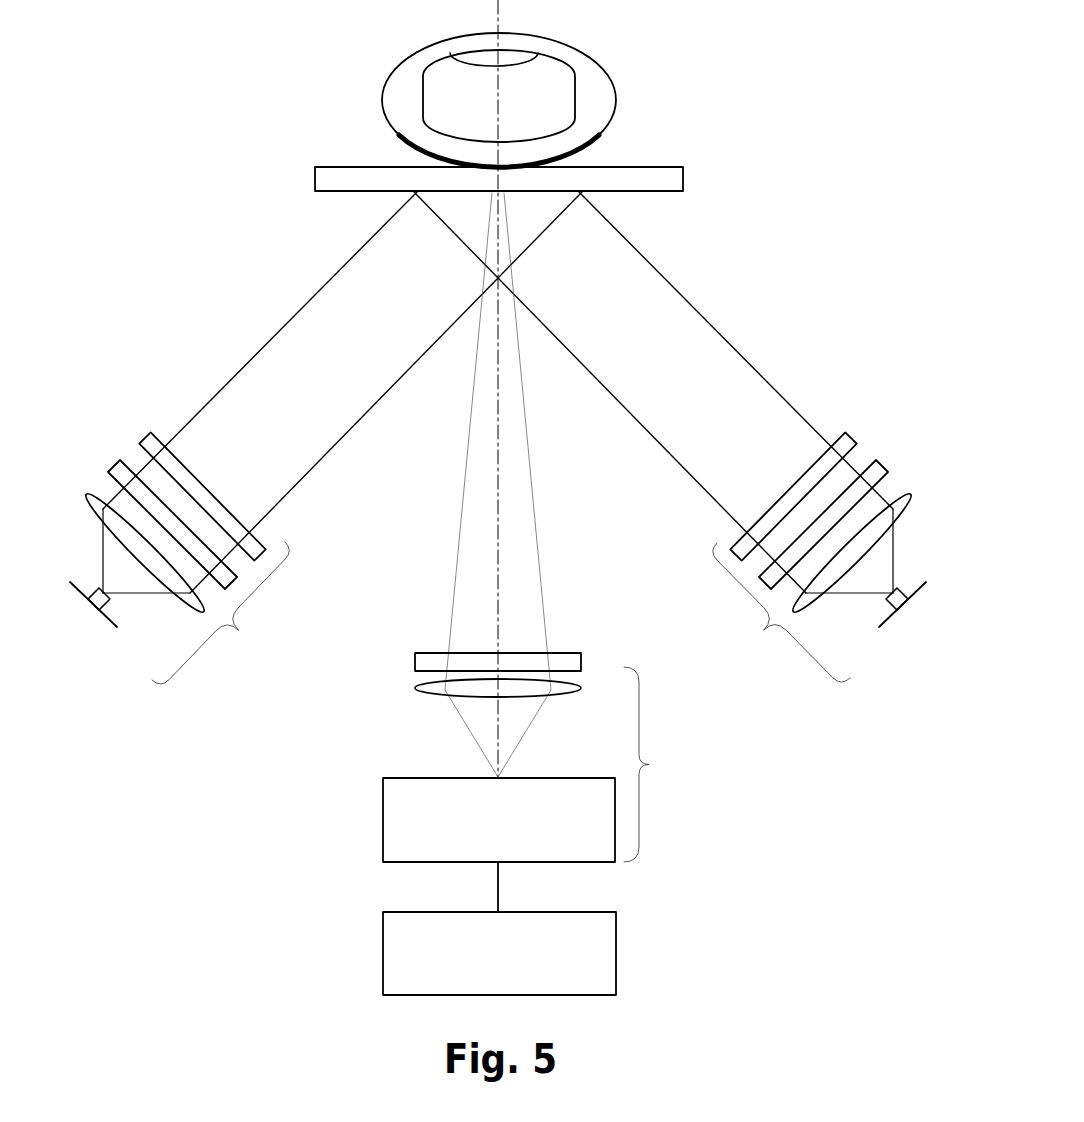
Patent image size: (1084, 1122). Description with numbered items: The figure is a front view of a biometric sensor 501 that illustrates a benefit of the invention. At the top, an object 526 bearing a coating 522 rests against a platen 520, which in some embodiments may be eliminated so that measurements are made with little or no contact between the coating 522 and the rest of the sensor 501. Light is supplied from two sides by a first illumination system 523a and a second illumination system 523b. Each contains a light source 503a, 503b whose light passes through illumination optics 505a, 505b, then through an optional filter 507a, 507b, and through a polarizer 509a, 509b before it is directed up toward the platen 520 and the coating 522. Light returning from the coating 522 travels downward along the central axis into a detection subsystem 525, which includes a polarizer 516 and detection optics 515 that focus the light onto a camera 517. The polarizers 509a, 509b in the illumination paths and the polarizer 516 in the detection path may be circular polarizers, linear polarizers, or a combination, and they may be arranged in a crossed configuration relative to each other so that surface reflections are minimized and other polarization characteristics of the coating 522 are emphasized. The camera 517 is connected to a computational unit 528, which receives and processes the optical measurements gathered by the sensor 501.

The biometric sensor 501 is at (257, 232).
The tire 526 is at (556, 42).
The coating 522 is at (599, 144).
The platen 520 is at (683, 183).
The polarizer 509a is at (139, 441).
The filter 507a is at (109, 467).
The illumination optics 505a is at (92, 503).
The light source 503a is at (113, 627).
The illumination system 523a is at (220, 613).
The polarizer 509b is at (857, 441).
The filter 507b is at (887, 467).
The illumination optics 505b is at (928, 492).
The light source 503b is at (883, 627).
The illumination system 523b is at (781, 612).
The polarizer 516 is at (566, 652).
The detection optics 515 is at (416, 688).
The camera 517 is at (383, 812).
The detection subsystem 525 is at (650, 764).
The computational unit 528 is at (383, 936).